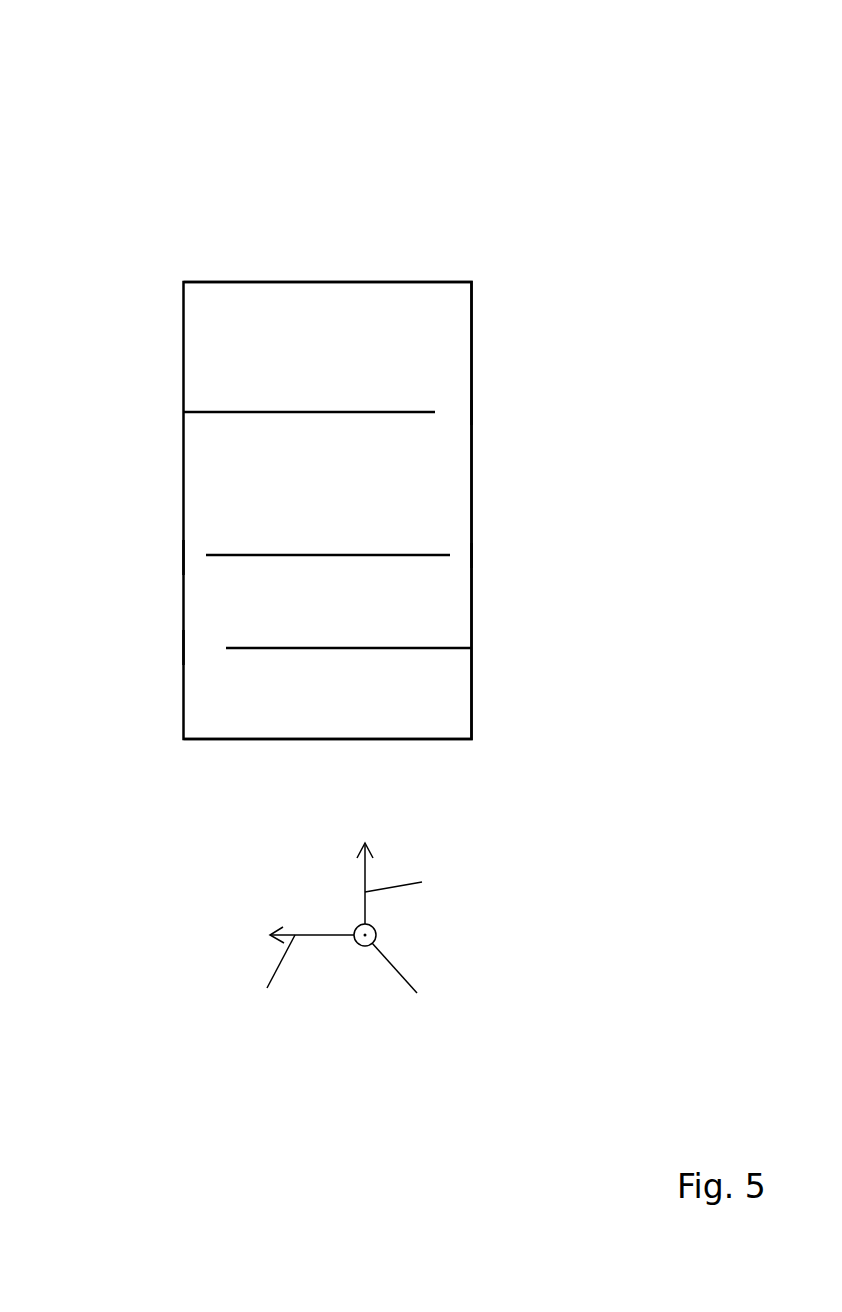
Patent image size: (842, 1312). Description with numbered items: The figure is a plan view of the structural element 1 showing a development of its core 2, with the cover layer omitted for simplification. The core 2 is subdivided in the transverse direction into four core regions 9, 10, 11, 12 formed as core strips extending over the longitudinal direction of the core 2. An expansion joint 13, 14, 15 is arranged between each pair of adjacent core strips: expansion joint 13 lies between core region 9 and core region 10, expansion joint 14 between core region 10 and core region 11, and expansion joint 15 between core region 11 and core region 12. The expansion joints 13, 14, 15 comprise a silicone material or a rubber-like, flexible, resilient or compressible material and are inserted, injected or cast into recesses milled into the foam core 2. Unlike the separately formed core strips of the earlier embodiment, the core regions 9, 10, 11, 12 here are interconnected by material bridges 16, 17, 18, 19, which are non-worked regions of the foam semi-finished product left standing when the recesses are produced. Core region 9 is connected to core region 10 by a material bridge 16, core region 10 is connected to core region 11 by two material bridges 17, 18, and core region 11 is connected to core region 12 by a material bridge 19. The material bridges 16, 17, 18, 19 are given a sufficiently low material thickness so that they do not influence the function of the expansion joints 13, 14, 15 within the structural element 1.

The structural element 1 is at (100, 85).
The core 2 is at (330, 271).
The core region 9 is at (443, 334).
The core region 10 is at (456, 491).
The core region 11 is at (448, 604).
The core region 12 is at (457, 702).
The expansion joint 13 is at (260, 411).
The expansion joint 14 is at (262, 555).
The expansion joint 15 is at (257, 647).
The material bridge 16 is at (457, 413).
The material bridge 17 is at (460, 555).
The material bridge 18 is at (195, 558).
The material bridge 19 is at (200, 647).